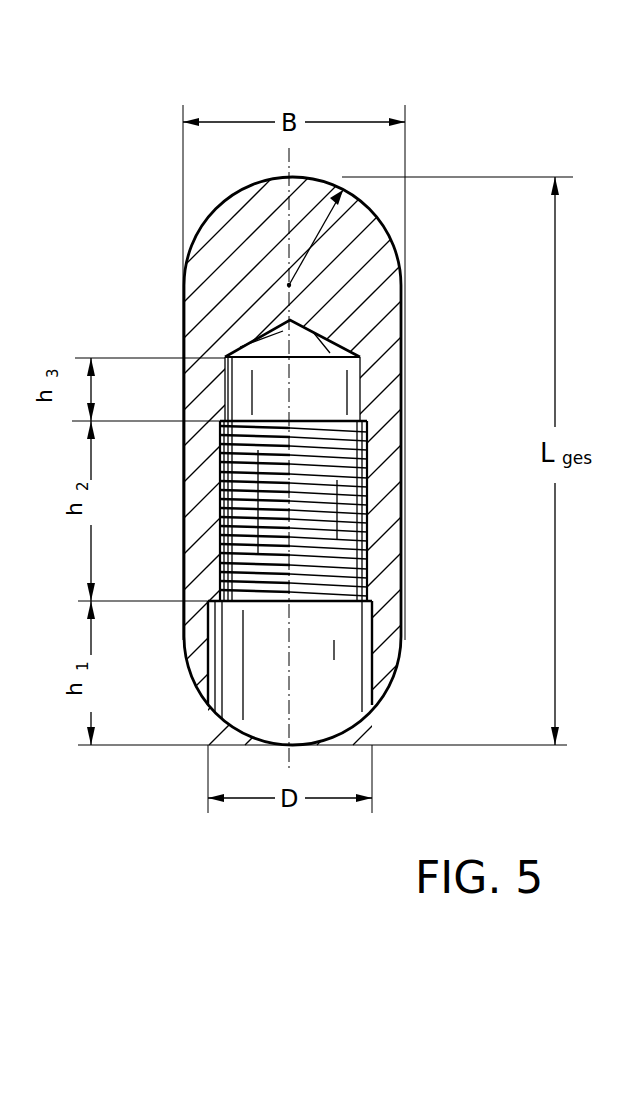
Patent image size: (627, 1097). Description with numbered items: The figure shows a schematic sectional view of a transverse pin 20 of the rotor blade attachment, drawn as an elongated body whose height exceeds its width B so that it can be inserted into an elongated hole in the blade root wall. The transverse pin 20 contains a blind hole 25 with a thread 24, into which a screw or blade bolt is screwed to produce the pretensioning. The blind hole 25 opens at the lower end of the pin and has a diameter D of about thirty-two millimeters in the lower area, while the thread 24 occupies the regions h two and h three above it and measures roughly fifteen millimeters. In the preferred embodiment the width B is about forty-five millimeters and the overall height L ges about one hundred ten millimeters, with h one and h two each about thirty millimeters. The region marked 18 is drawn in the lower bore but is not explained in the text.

The transverse pin 20 is at (213, 287).
The thread 24 is at (370, 476).
The blind hole 25 is at (330, 560).
The bore 18 is at (285, 635).